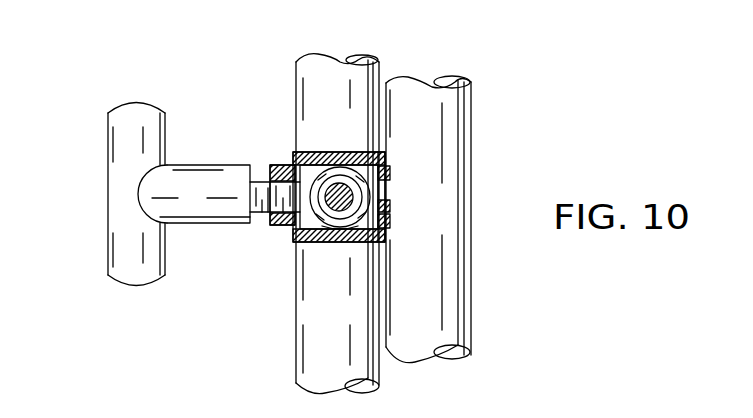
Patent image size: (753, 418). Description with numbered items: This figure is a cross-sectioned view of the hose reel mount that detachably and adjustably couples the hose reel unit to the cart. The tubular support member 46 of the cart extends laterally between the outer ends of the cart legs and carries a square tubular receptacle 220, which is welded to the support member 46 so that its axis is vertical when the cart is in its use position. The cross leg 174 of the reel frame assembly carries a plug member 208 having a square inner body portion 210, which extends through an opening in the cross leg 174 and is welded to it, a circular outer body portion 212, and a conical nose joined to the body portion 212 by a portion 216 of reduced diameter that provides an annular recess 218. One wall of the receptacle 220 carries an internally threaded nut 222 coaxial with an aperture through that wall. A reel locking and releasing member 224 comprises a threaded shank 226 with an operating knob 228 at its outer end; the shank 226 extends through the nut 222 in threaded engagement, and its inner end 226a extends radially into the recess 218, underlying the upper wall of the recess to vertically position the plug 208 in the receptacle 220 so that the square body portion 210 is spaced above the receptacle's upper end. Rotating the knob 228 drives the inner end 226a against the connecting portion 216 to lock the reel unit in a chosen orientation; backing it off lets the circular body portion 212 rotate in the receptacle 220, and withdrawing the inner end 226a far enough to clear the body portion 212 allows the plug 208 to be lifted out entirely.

The reel locking and releasing member 224 is at (150, 174).
The operating knob 228 is at (120, 243).
The threaded shank 226 is at (263, 211).
The internally threaded nut 222 is at (281, 165).
The square tubular receptacle 220 is at (336, 184).
The plug member 208 is at (352, 153).
The portion of reduced diameter 216 is at (330, 238).
The inner body portion 210 is at (386, 164).
The inner end 226a is at (387, 173).
The annular recess 218 is at (387, 207).
The outer body portion 212 is at (387, 228).
The cross leg 174 is at (318, 345).
The tubular support member 46 is at (450, 310).